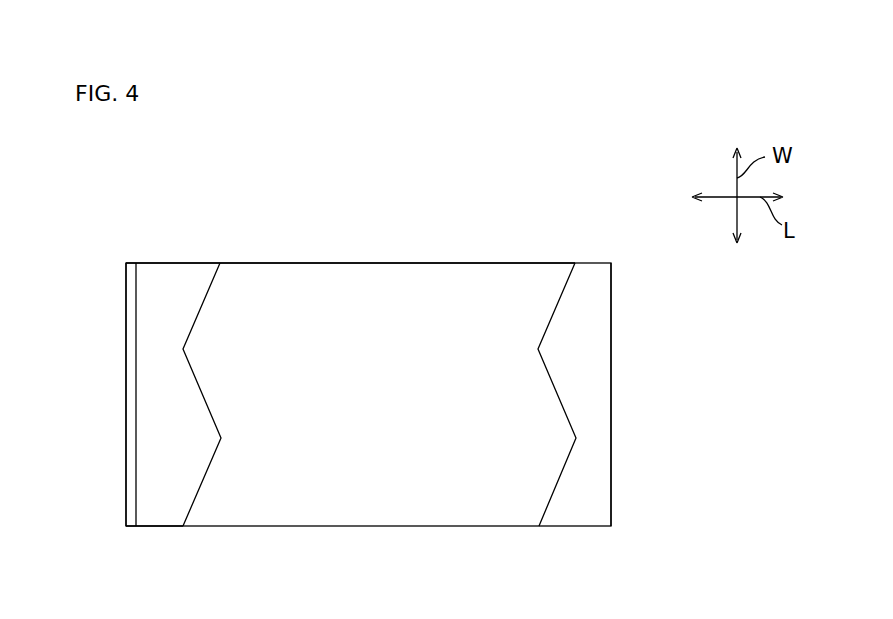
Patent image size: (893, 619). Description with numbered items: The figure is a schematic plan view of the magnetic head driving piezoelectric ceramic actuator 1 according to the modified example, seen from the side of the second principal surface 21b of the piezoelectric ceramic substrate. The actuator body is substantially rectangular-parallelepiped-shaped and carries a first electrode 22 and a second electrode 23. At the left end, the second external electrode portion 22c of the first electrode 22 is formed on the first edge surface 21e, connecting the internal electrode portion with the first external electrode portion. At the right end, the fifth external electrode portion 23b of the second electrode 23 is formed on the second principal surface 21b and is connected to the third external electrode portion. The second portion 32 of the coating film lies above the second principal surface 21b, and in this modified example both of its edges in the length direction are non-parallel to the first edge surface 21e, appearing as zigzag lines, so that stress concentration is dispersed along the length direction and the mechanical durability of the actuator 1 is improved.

The actuator 1 is at (538, 228).
The first electrode 22 is at (124, 367).
The second external electrode portion 22c is at (126, 421).
The first edge surface 21e is at (136, 468).
The second principal surface 21b is at (194, 274).
The second portion 32 is at (376, 273).
The second electrode 23 is at (612, 359).
The fifth external electrode portion 23b is at (595, 465).